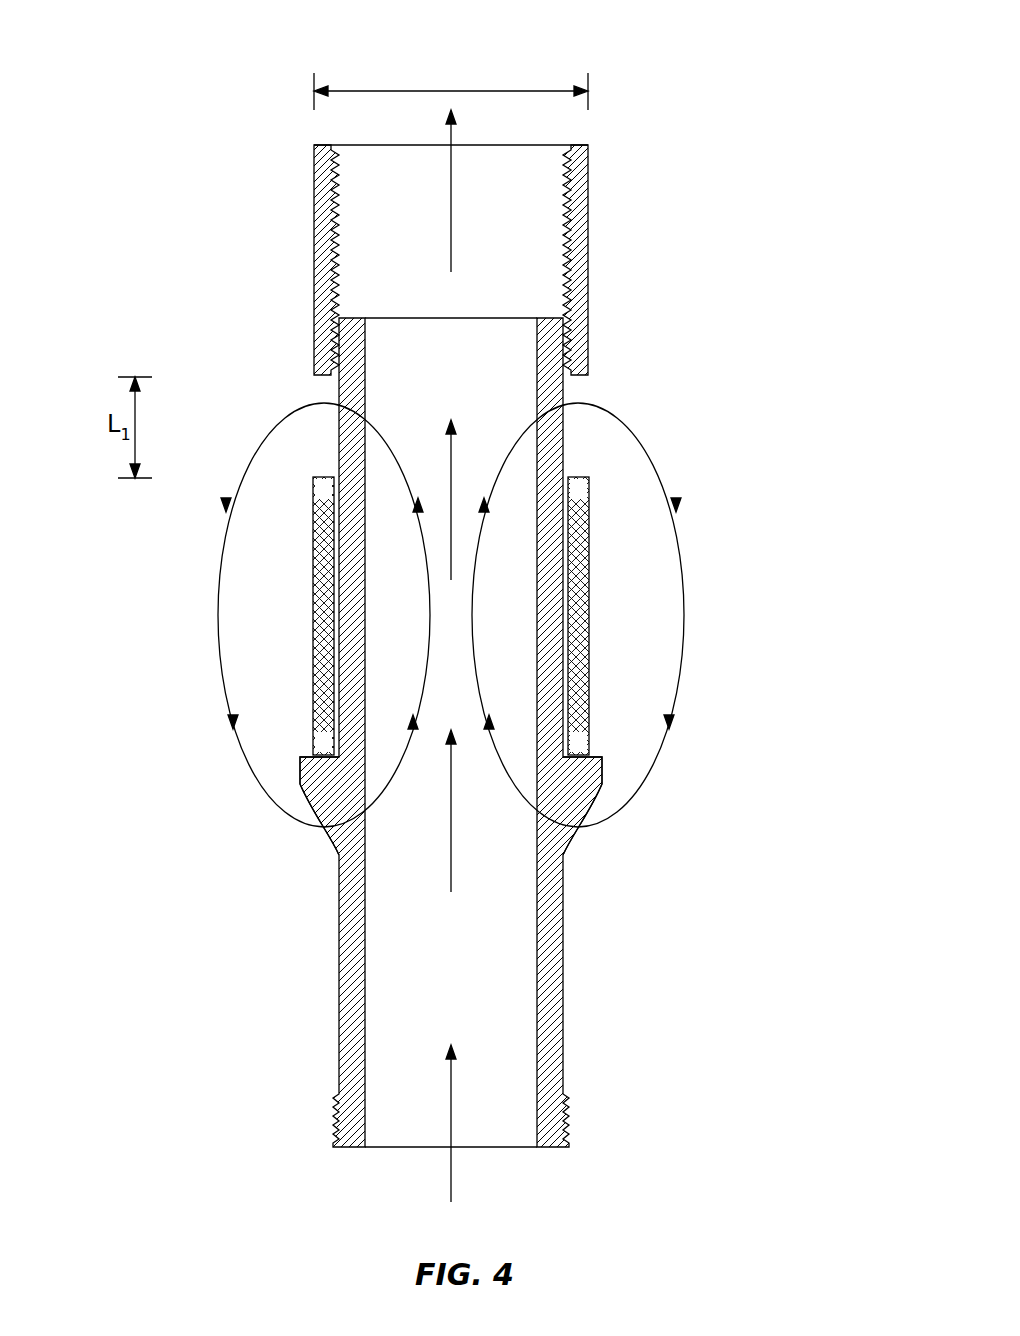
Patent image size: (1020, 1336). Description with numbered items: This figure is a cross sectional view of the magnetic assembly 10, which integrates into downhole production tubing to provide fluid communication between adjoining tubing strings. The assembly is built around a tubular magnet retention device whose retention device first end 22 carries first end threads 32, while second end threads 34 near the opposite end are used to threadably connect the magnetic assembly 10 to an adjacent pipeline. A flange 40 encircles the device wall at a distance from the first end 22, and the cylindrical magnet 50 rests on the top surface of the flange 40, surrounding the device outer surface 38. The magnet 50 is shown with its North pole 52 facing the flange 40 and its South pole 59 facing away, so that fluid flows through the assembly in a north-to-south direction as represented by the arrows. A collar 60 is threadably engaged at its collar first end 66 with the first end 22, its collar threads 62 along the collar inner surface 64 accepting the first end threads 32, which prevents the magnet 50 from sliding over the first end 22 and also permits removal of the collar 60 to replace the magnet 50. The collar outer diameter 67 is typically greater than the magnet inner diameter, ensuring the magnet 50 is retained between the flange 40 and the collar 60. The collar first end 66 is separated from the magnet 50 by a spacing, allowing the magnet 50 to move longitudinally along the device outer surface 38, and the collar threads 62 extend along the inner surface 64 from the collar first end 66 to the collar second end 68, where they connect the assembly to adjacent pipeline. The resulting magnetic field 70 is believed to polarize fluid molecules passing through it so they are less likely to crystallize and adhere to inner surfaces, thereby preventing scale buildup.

The magnetic assembly 10 is at (222, 46).
The retention device first end 22 is at (553, 318).
The first end threads 32 is at (339, 350).
The second end threads 34 is at (573, 1110).
The device outer surface 38 is at (339, 397).
The flange 40 is at (582, 805).
The magnet 50 is at (592, 598).
The North pole 52 is at (305, 784).
The South pole 59 is at (325, 477).
The collar 60 is at (588, 205).
The collar threads 62 is at (338, 206).
The collar inner surface 64 is at (552, 180).
The collar first end 66 is at (580, 376).
The collar outer diameter 67 is at (410, 88).
The collar second end 68 is at (314, 145).
The magnetic field 70 is at (218, 603).